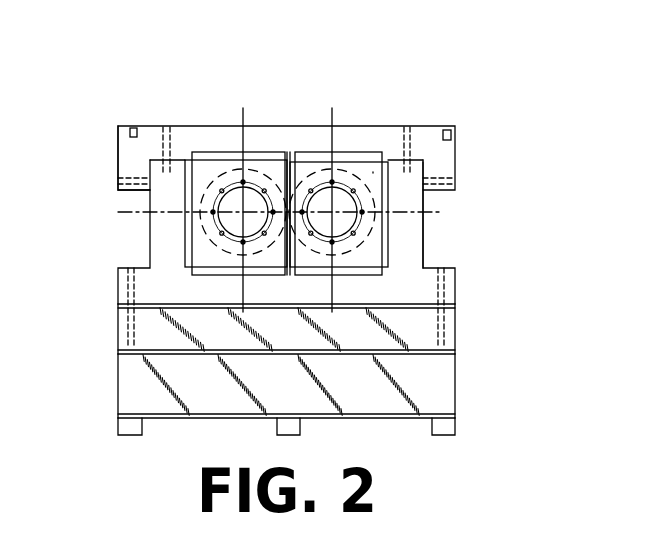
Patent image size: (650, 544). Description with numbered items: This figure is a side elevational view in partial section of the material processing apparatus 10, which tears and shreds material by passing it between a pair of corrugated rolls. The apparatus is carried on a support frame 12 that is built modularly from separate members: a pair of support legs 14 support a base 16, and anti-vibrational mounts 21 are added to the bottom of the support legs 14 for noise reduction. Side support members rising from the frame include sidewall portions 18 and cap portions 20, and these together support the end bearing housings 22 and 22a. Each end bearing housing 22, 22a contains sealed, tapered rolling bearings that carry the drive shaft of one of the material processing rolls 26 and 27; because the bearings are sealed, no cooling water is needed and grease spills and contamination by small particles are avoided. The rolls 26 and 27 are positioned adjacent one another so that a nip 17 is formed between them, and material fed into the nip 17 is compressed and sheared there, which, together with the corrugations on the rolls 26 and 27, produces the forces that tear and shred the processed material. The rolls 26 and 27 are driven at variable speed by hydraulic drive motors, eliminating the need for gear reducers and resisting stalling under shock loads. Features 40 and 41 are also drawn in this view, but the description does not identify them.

The material processing apparatus 10 is at (144, 82).
The support frame 12 is at (139, 233).
The support leg 14 is at (457, 378).
The base 16 is at (457, 330).
The nip 17 is at (288, 196).
The sidewall portion 18 is at (417, 247).
The cap portion 20 is at (118, 148).
The anti-vibrational mount 21 is at (458, 427).
The end bearing housing 22 is at (384, 158).
The end bearing housing 22a is at (207, 152).
The roll 26 is at (255, 167).
The roll 27 is at (337, 170).
The fastener ring 40 is at (260, 180).
The opening 41 is at (373, 172).